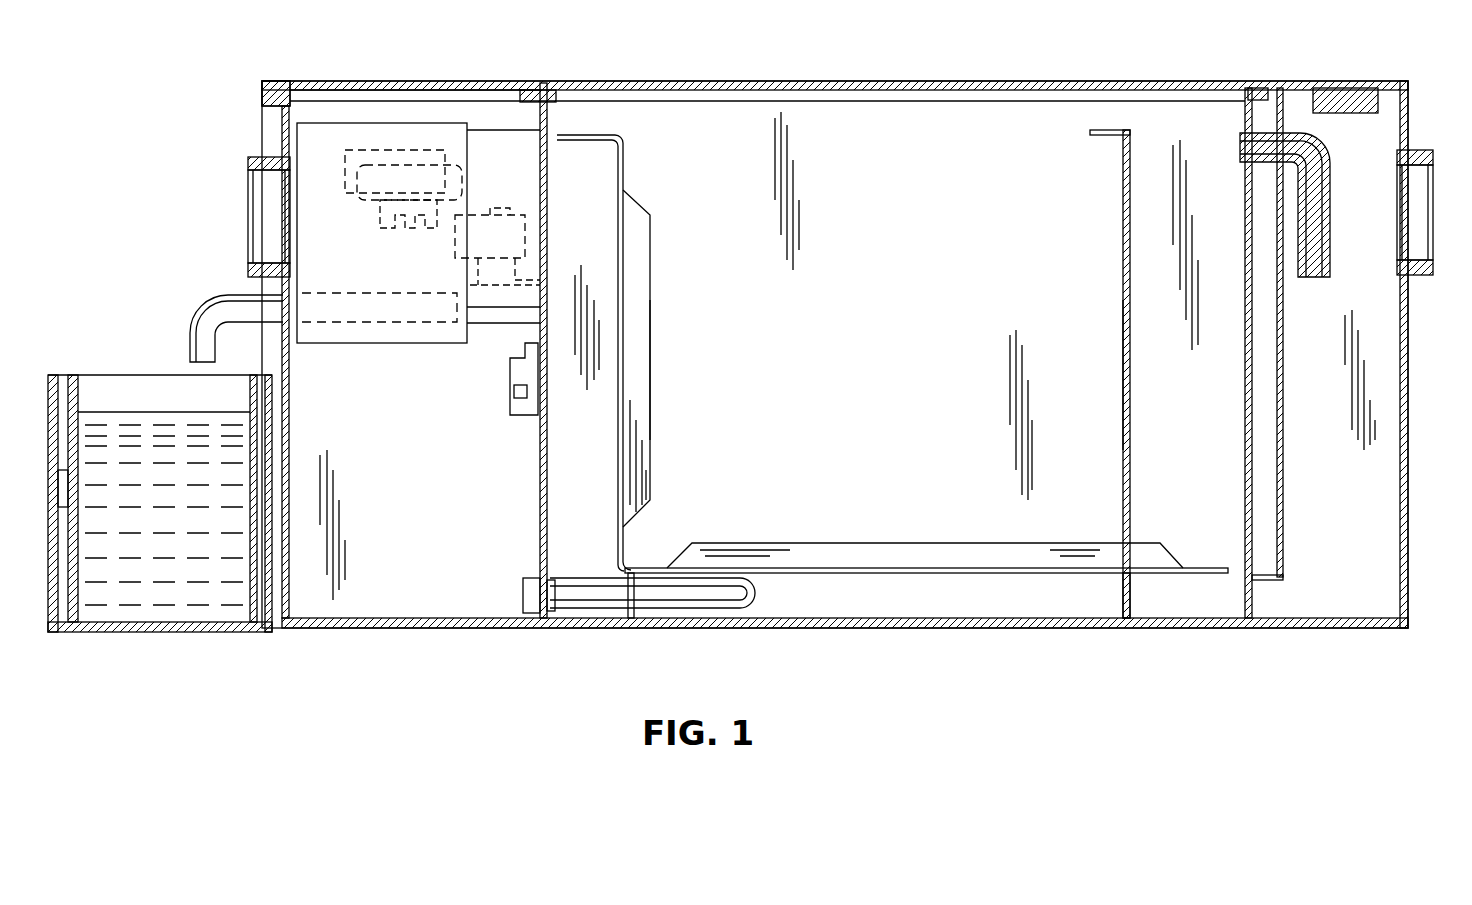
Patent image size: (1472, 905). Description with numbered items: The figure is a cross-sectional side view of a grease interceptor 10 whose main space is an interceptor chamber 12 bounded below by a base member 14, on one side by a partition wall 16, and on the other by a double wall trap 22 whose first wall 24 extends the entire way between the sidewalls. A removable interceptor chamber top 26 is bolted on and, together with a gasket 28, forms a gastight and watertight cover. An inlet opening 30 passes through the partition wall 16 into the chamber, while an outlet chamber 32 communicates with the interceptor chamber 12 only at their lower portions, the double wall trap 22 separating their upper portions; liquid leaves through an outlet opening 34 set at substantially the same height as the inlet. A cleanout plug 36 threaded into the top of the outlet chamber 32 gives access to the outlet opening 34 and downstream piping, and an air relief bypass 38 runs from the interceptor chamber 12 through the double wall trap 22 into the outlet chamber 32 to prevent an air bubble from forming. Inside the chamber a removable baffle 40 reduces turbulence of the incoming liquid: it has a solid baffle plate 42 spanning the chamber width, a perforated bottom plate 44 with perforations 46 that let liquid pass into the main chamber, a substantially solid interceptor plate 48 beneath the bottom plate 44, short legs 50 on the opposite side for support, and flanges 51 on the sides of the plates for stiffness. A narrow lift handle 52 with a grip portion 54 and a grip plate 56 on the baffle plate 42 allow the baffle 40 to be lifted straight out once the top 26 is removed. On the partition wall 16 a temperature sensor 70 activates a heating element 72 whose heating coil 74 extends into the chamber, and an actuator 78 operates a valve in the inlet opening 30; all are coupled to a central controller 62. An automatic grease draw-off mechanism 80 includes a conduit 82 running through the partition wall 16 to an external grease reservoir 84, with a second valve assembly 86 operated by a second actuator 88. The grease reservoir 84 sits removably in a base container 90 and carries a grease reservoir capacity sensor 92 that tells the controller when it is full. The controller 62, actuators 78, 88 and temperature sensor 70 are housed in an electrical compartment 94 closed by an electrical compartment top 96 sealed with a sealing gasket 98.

The grease interceptor 10 is at (230, 122).
The interceptor chamber 12 is at (848, 344).
The base member 14 is at (852, 628).
The partition wall 16 is at (538, 478).
The double wall trap 22 is at (1288, 400).
The first wall 24 is at (1245, 400).
The interceptor chamber top 26 is at (946, 81).
The gasket 28 is at (562, 85).
The inlet opening 30 is at (247, 254).
The outlet chamber 32 is at (1311, 467).
The outlet opening 34 is at (1428, 150).
The cleanout plug 36 is at (1346, 88).
The air relief bypass 38 is at (1332, 165).
The removable baffle 40 is at (668, 260).
The solid baffle plate 42 is at (645, 430).
The perforated bottom plate 44 is at (895, 566).
The perforations 46 is at (1102, 566).
The interceptor plate 48 is at (1130, 600).
The short legs 50 is at (640, 617).
The flanges 51 is at (650, 378).
The lift handle 52 is at (1122, 370).
The grip portion 54 is at (1097, 140).
The grip plate 56 is at (587, 141).
The central controller 62 is at (385, 343).
The temperature sensor 70 is at (516, 390).
The heating element 72 is at (522, 593).
The heating coil 74 is at (765, 595).
The actuator 78 is at (396, 197).
The automatic grease draw-off mechanism 80 is at (480, 345).
The conduit 82 is at (196, 318).
The grease reservoir 84 is at (95, 413).
The second valve assembly 86 is at (492, 320).
The second actuator 88 is at (476, 252).
The base container 90 is at (60, 376).
The grease reservoir capacity sensor 92 is at (70, 492).
The electrical compartment 94 is at (374, 481).
The electrical compartment top 96 is at (397, 83).
The sealing gasket 98 is at (298, 88).